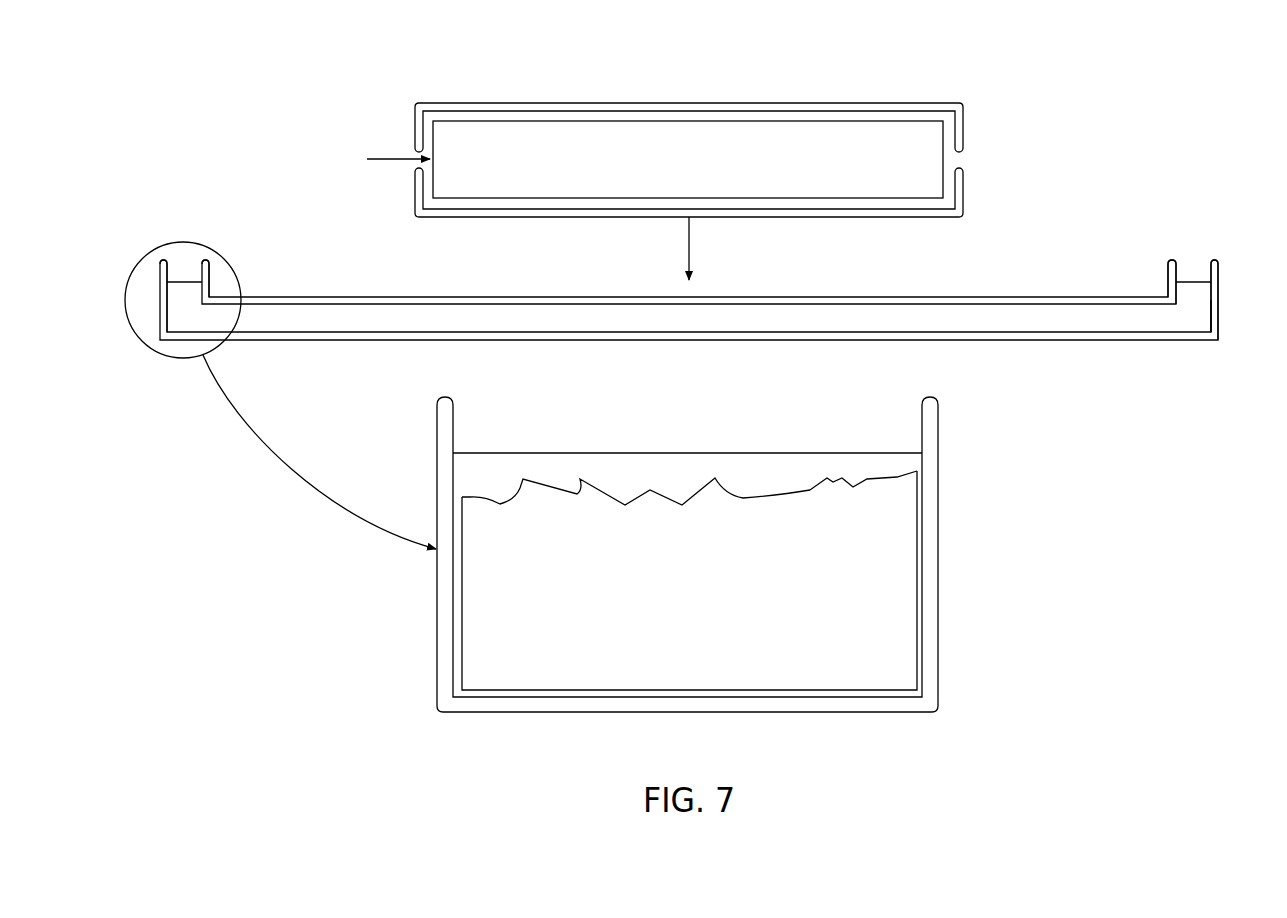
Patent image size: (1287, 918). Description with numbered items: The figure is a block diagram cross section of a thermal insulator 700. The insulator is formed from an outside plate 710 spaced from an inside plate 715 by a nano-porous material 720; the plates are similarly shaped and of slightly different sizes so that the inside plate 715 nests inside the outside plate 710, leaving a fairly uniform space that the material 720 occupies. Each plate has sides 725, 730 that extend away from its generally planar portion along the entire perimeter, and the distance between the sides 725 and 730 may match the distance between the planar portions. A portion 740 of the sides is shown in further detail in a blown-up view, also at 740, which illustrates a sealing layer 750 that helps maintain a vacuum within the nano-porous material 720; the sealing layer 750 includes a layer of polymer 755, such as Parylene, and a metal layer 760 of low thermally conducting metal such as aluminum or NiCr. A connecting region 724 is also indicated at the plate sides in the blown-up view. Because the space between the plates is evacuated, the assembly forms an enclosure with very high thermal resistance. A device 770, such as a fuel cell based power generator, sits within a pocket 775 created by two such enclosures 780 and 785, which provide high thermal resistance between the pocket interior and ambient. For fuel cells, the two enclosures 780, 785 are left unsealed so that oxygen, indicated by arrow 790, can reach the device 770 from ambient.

The thermal insulator 700 is at (1150, 63).
The outside plate 710 is at (405, 340).
The inside plate 715 is at (953, 297).
The nano-porous material 720 is at (1193, 298).
The left connector 724 is at (163, 258).
The side of plate 725 is at (1214, 258).
The side of plate 730 is at (205, 258).
The portion of the sides of the plates 740 is at (125, 300).
The sealing layer 750 is at (1190, 281).
The polymer 755 is at (638, 497).
The metal layer 760 is at (680, 465).
The device 770 is at (946, 158).
The pocket 775 is at (826, 117).
The enclosure 780 is at (528, 218).
The enclosure 785 is at (692, 103).
The arrow indicating oxygen 790 is at (400, 156).